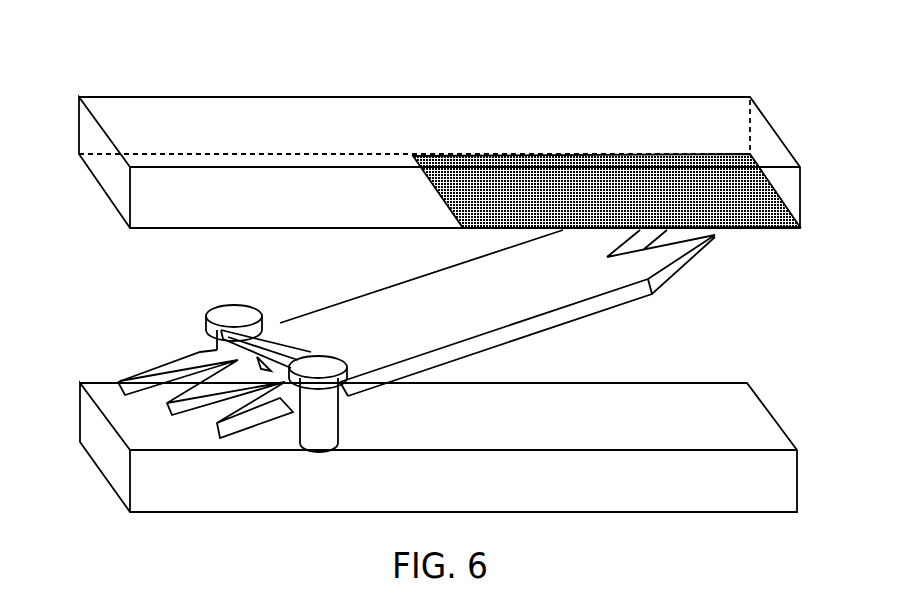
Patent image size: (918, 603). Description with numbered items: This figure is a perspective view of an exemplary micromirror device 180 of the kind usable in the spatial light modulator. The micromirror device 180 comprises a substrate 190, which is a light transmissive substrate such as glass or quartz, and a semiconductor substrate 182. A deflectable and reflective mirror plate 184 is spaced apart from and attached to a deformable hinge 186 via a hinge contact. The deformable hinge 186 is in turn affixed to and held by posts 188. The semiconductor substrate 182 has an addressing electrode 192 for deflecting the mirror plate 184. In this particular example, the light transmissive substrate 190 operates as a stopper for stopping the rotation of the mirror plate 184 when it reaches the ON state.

The micromirror device 180 is at (509, 58).
The semiconductor substrate 182 is at (258, 117).
The mirror plate 184 is at (440, 300).
The deformable hinge 186 is at (275, 337).
The posts 188 is at (338, 415).
The substrate 190 is at (637, 403).
The addressing electrode 192 is at (762, 229).